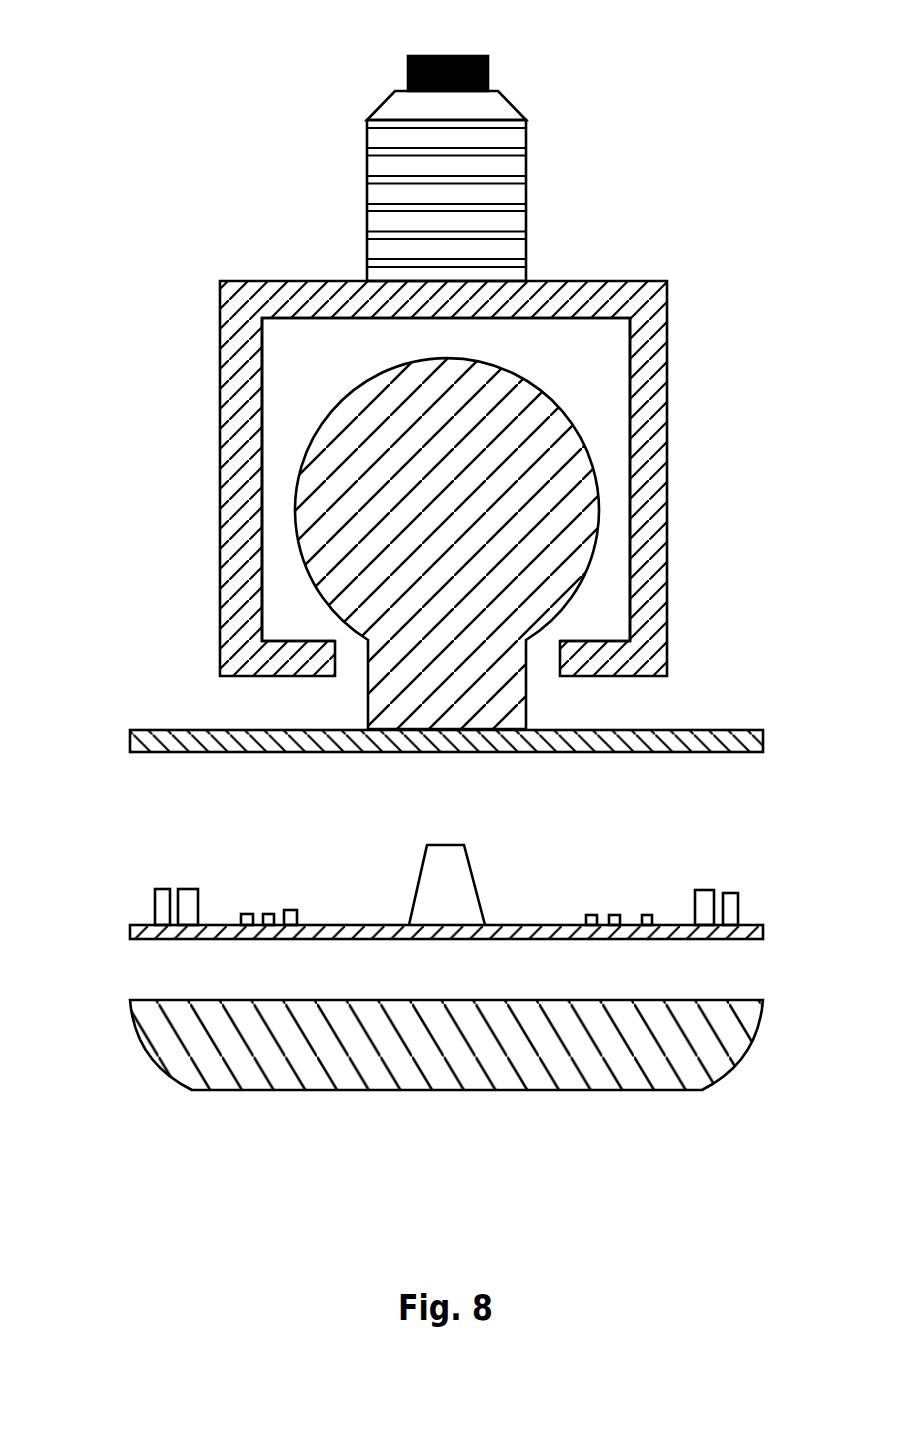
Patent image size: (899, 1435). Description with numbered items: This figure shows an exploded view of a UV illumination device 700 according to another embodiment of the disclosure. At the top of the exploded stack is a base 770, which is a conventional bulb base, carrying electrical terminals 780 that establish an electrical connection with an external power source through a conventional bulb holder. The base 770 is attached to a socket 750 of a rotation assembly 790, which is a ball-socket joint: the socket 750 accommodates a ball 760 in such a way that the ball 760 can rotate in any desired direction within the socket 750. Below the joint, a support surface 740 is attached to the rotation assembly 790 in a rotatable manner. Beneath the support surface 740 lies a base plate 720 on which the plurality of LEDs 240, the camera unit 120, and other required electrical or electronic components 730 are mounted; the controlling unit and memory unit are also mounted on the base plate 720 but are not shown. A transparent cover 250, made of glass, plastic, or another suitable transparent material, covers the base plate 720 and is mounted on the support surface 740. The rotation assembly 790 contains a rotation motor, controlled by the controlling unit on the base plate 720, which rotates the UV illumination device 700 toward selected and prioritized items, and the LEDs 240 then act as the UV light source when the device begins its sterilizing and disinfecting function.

The UV illumination device 700 is at (189, 121).
The electrical terminals 780 is at (489, 68).
The base 770 is at (527, 224).
The rotation assembly 790 is at (677, 348).
The socket 750 is at (628, 348).
The ball 760 is at (314, 433).
The support surface 740 is at (128, 732).
The base plate 720 is at (130, 925).
The camera unit 120 is at (415, 887).
The electrical or electronic components 730 is at (615, 913).
The plurality of LEDs 240 is at (739, 905).
The transparent cover 250 is at (752, 1025).